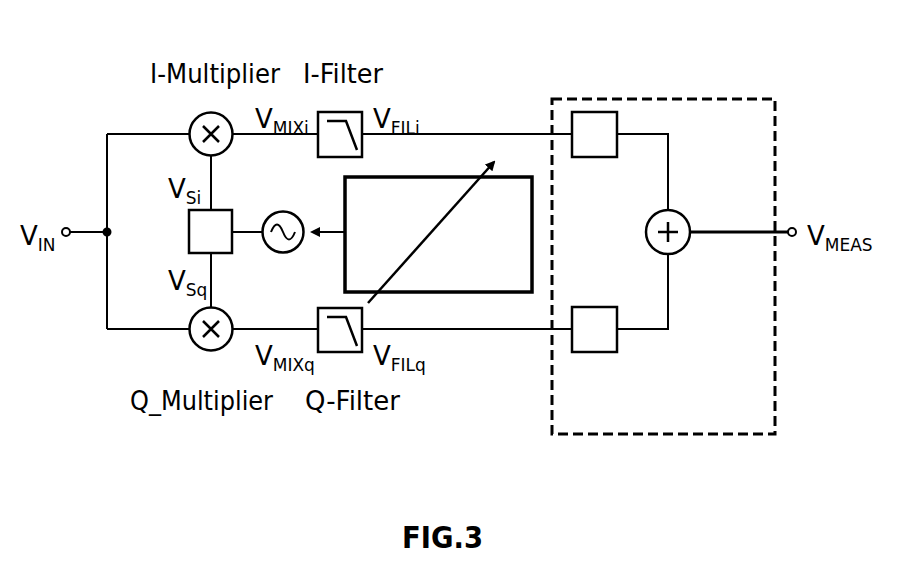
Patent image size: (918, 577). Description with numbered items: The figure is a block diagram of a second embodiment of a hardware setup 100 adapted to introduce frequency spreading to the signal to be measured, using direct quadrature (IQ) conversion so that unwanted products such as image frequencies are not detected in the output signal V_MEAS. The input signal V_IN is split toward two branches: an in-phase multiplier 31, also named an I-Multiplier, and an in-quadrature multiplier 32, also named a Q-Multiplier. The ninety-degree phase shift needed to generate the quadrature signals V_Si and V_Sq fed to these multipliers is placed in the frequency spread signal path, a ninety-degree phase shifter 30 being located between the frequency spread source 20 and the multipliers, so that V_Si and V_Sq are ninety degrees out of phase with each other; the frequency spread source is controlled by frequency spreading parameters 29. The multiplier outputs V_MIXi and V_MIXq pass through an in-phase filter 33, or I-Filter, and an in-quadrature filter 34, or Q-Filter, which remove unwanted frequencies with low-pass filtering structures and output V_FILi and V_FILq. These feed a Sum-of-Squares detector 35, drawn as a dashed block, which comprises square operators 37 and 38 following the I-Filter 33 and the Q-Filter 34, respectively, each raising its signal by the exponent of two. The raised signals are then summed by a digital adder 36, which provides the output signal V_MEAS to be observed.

The hardware setup 100 is at (277, 482).
The frequency spread source 20 is at (285, 254).
The frequency spreading parameters 29 is at (537, 230).
The 90° phase shifter 30 is at (189, 226).
The in-phase multiplier 31 is at (193, 120).
The in-quadrature multiplier 32 is at (195, 345).
The in-phase filter 33 is at (363, 142).
The in-quadrature filter 34 is at (363, 315).
The Sum-of-Squares detector 35 is at (550, 98).
The digital adder 36 is at (684, 212).
The square operator 37 is at (610, 110).
The square operator 38 is at (640, 340).